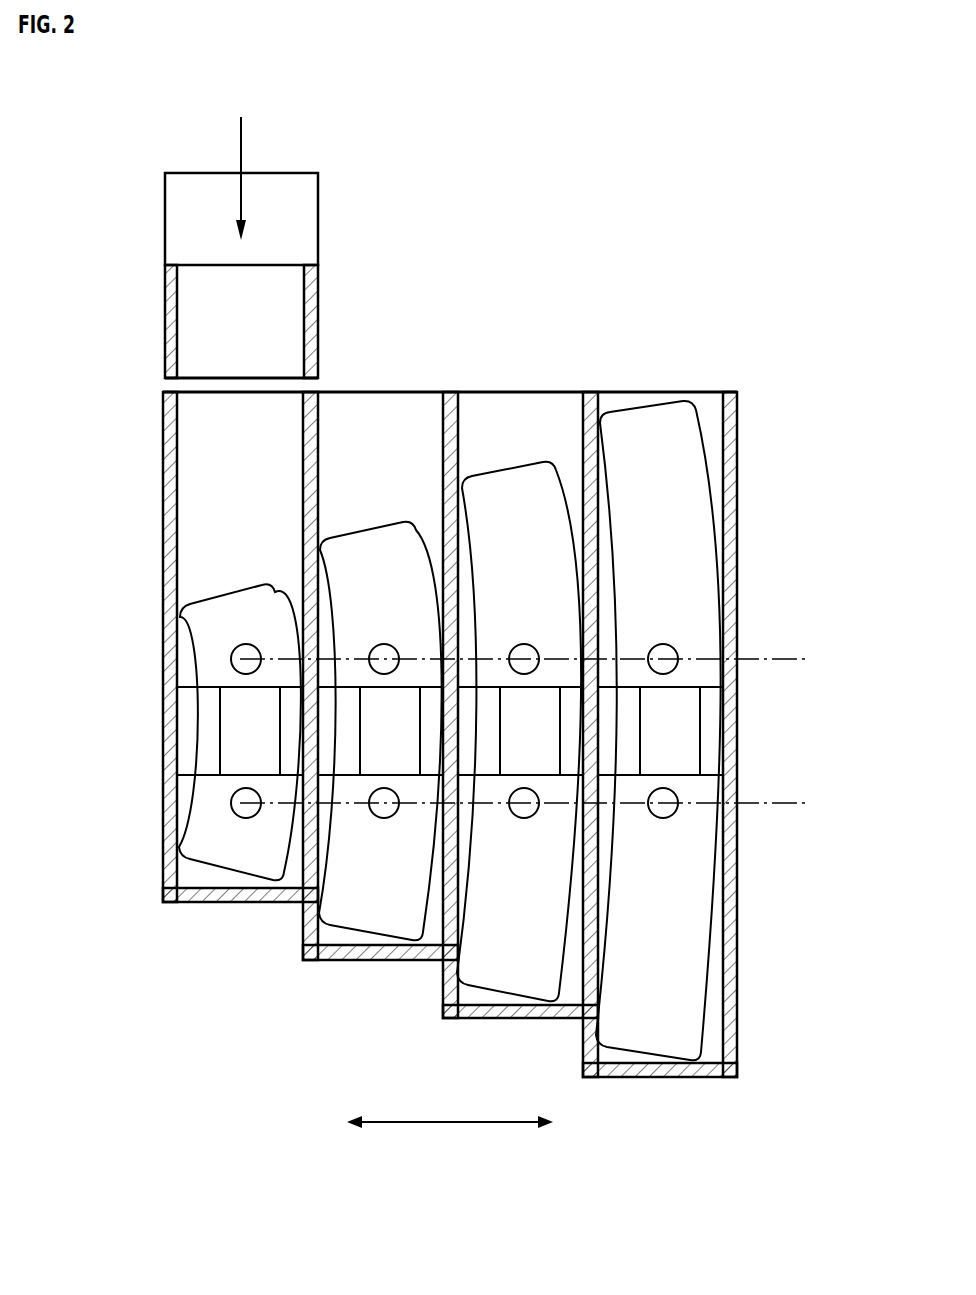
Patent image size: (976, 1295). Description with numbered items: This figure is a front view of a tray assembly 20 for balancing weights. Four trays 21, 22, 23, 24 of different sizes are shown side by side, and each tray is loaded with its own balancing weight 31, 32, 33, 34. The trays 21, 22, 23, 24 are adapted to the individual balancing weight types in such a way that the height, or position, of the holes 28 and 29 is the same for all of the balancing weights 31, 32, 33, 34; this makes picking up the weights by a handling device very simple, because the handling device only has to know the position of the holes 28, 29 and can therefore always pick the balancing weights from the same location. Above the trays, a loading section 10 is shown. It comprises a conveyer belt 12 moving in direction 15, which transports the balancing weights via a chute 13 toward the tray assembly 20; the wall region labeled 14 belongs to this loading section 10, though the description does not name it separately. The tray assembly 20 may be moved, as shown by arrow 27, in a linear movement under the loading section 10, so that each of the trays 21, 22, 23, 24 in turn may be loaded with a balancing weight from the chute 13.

The loading section 10 is at (225, 247).
The conveyer belt 12 is at (290, 214).
The chute 13 is at (284, 317).
The cylinder wall 14 is at (310, 273).
The direction 15 is at (241, 133).
The tray assembly 20 is at (487, 703).
The tray 21 is at (240, 656).
The tray 22 is at (380, 686).
The tray 23 is at (520, 715).
The tray 24 is at (660, 745).
The arrow 27 is at (453, 1120).
The hole 28 is at (790, 659).
The hole 29 is at (790, 804).
The balancing weight 31 is at (232, 840).
The balancing weight 32 is at (372, 900).
The balancing weight 33 is at (512, 957).
The balancing weight 34 is at (653, 1020).